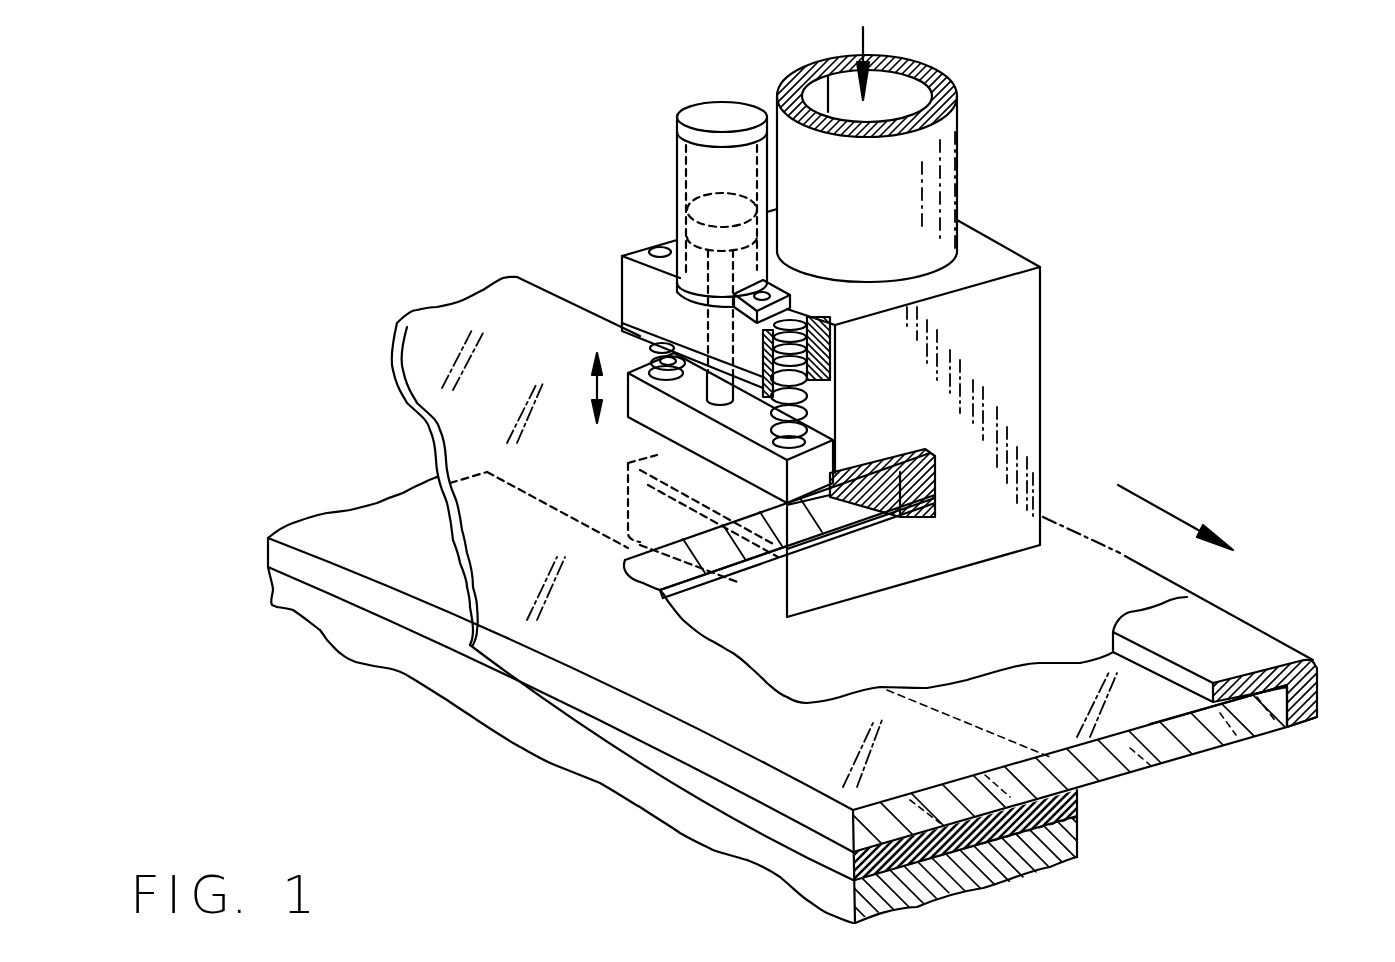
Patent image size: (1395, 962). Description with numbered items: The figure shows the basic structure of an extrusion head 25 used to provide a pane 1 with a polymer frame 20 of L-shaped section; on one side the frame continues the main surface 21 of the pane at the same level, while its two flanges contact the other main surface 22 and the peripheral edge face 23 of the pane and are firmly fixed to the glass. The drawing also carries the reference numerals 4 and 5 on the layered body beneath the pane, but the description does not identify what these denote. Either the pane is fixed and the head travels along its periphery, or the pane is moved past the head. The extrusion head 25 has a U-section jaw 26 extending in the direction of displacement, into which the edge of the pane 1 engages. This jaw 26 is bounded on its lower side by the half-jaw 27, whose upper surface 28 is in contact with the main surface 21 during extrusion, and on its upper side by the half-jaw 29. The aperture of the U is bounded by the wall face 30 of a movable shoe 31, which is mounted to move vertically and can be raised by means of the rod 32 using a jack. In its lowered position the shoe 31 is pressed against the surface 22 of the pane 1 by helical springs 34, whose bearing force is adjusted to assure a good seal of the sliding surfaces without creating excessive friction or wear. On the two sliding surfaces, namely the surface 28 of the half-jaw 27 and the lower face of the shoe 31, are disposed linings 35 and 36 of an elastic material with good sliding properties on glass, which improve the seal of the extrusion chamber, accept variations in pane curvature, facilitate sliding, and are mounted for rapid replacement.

The pane 1 is at (1147, 773).
The lower layer 4 is at (1040, 857).
The intermediate layer 5 is at (1077, 810).
The polymer frame 20 is at (1208, 645).
The main surface 21 is at (1227, 745).
The main surface 22 is at (1040, 683).
The peripheral edge face 23 is at (1348, 785).
The extrusion head 25 is at (1000, 367).
The jaw 26 is at (620, 447).
The half-jaw 27 is at (893, 570).
The upper surface 28 is at (893, 517).
The half-jaw 29 is at (877, 448).
The wall face 30 is at (850, 470).
The movable shoe 31 is at (703, 168).
The rod 32 is at (718, 388).
The helical springs 34 is at (655, 348).
The lining 35 is at (833, 555).
The lining 36 is at (830, 404).